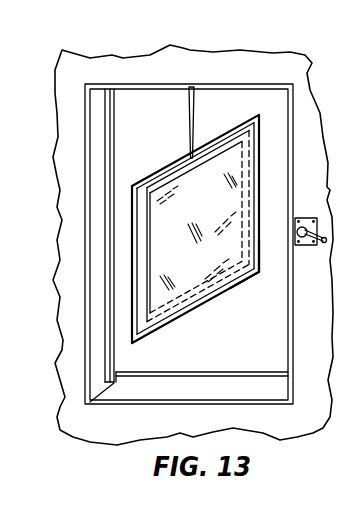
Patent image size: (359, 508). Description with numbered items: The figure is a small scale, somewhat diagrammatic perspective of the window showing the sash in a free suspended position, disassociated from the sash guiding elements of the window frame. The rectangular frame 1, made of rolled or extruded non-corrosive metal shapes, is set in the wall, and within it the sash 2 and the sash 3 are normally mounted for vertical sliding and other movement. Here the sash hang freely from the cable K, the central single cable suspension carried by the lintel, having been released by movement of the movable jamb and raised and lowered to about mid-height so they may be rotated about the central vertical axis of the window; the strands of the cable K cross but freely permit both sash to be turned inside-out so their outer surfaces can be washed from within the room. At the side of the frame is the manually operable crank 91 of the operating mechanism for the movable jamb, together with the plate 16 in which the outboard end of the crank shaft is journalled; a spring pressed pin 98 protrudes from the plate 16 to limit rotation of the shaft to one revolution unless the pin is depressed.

The rectangular frame 1 is at (113, 394).
The sash 2 is at (164, 171).
The sash 3 is at (251, 279).
The cable K is at (196, 121).
The plate 16 is at (329, 217).
The crank 91 is at (327, 239).
The spring pressed pin 98 is at (307, 246).